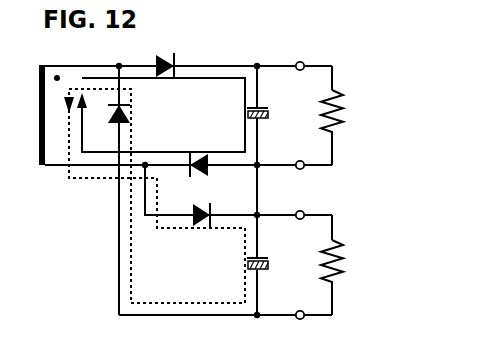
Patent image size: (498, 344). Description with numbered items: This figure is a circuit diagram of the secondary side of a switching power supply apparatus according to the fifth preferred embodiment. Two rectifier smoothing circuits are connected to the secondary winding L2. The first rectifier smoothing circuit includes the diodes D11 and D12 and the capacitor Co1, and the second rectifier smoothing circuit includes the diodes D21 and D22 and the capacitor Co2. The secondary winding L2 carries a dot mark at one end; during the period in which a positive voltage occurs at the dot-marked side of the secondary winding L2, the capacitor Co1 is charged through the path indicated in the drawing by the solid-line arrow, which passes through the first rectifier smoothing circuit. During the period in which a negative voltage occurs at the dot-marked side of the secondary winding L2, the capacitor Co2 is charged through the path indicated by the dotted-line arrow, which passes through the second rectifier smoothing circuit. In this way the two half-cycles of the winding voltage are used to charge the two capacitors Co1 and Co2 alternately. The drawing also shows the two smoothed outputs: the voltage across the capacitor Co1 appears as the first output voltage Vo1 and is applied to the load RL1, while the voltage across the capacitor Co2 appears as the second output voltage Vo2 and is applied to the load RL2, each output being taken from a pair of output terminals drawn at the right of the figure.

The secondary winding L2 is at (148, 104).
The diode D11 is at (162, 55).
The diode D12 is at (202, 153).
The diode D21 is at (201, 208).
The diode D22 is at (182, 190).
The capacitor Co1 is at (271, 115).
The capacitor Co2 is at (271, 240).
The first load resistor RL1 is at (349, 127).
The second load resistor RL2 is at (349, 277).
The first output voltage Vo1 is at (349, 78).
The second output voltage Vo2 is at (349, 227).